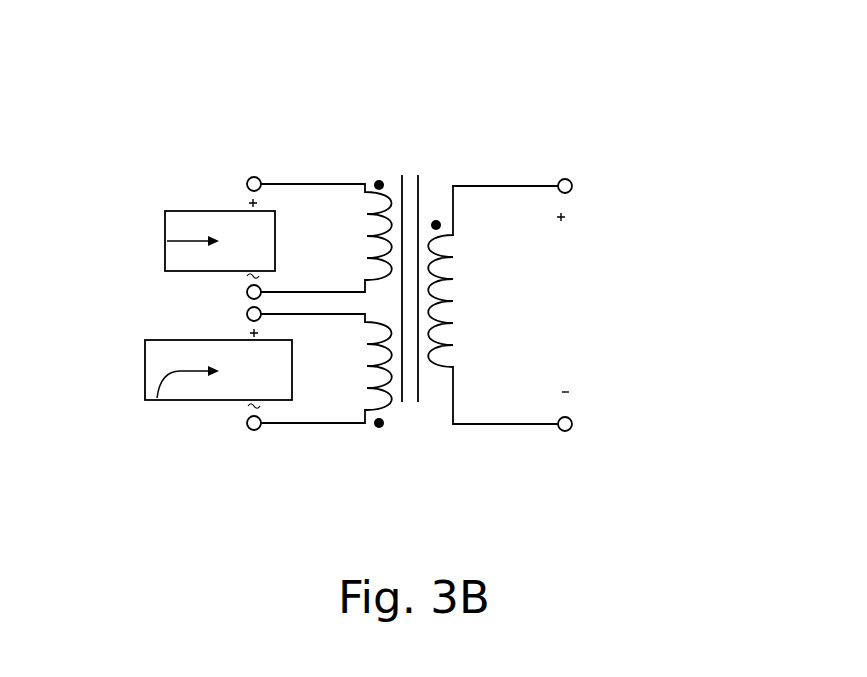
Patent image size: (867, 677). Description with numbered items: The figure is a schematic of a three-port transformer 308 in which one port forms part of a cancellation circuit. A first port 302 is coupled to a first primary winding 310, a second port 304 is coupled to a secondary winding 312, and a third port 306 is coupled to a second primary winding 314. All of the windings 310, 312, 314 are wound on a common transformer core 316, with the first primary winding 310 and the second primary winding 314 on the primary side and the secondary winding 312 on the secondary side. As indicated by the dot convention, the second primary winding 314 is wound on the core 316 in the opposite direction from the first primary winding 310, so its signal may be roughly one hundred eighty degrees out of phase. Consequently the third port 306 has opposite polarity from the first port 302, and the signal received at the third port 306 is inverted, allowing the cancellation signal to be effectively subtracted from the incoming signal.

The first port 302 is at (165, 238).
The second port 304 is at (622, 306).
The third port 306 is at (157, 400).
The three-port transformer 308 is at (400, 259).
The first primary winding 310 is at (300, 184).
The secondary winding 312 is at (495, 186).
The second primary winding 314 is at (315, 423).
The transformer core 316 is at (420, 404).